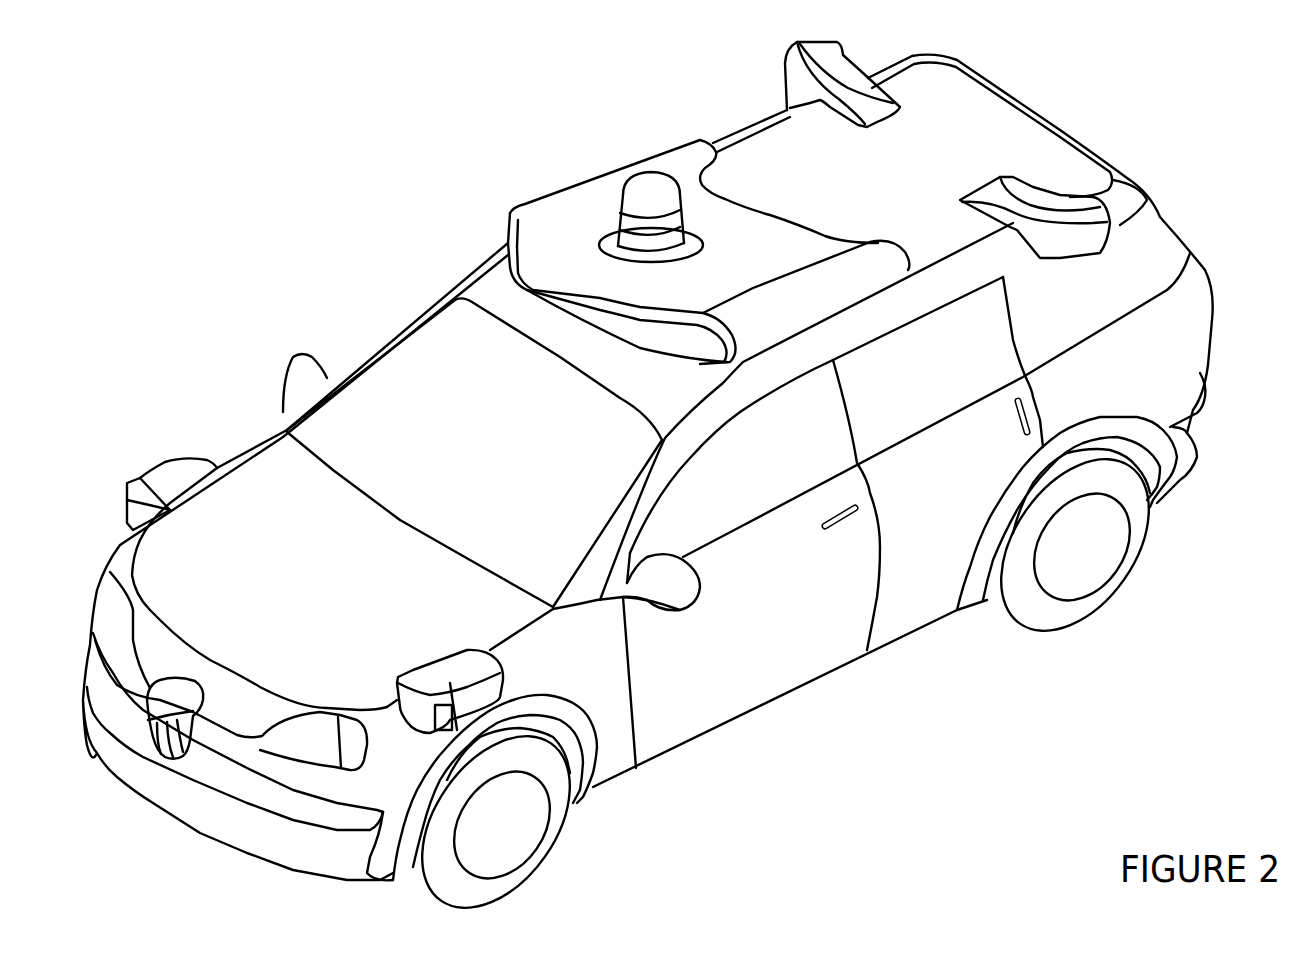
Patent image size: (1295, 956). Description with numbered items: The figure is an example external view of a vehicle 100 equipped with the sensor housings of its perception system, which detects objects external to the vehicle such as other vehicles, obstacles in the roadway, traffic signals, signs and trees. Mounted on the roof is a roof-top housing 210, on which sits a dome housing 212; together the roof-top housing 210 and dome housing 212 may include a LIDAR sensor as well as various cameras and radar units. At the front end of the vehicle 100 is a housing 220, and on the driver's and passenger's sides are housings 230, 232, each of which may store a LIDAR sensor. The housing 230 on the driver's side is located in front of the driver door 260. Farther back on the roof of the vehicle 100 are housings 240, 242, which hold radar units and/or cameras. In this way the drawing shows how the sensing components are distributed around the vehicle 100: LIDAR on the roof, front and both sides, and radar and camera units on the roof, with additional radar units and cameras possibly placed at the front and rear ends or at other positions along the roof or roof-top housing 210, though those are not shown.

The vehicle 100 is at (197, 237).
The roof-top housing 210 is at (508, 236).
The dome housing 212 is at (617, 200).
The housing 220 is at (150, 746).
The housing 230 is at (420, 661).
The housing 232 is at (152, 470).
The housing 240 is at (1117, 242).
The housing 242 is at (784, 80).
The driver door 260 is at (850, 484).